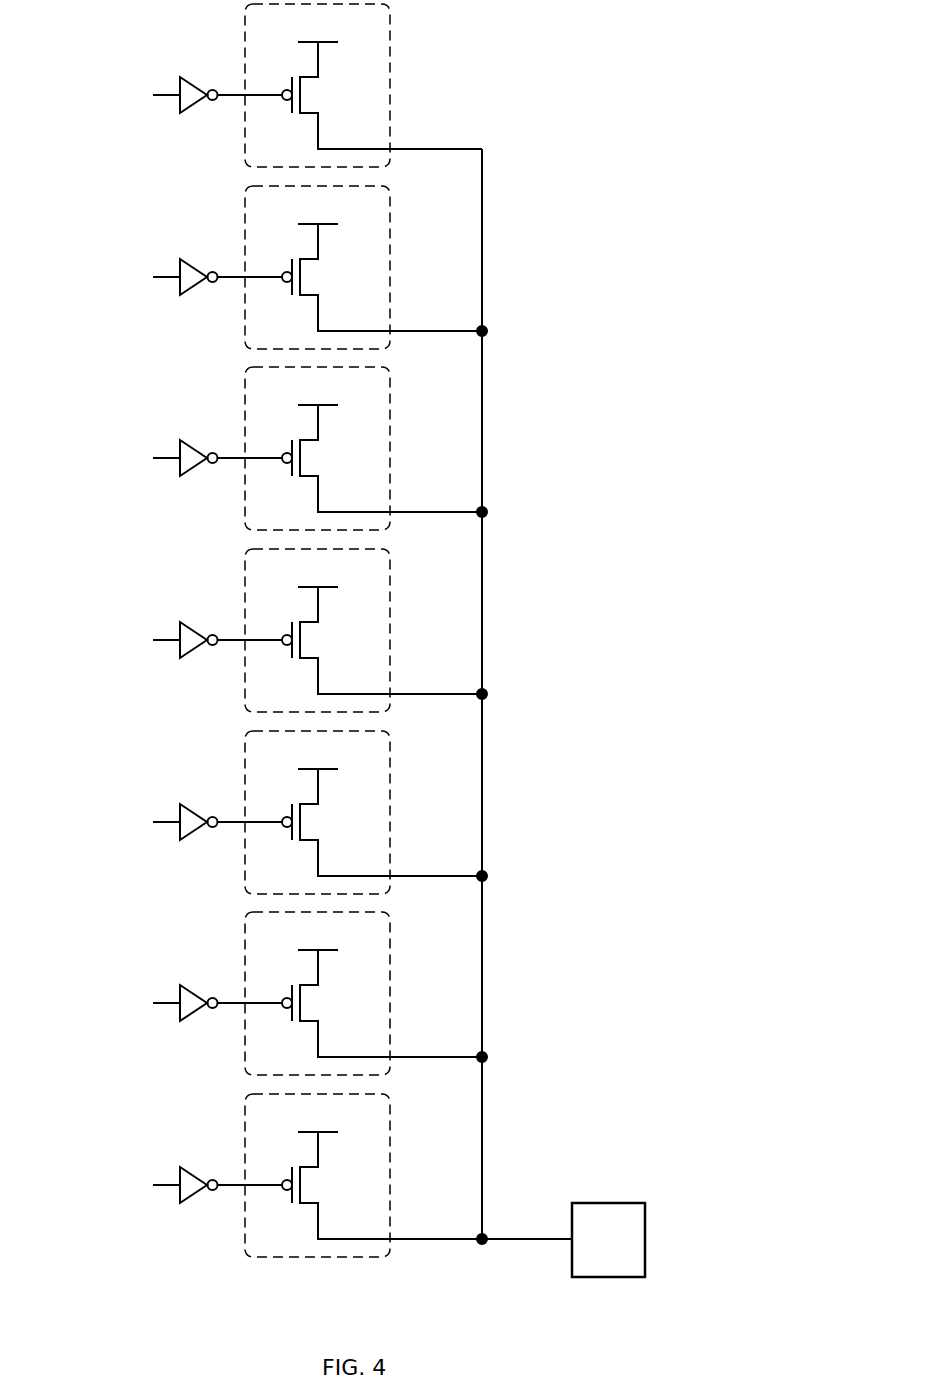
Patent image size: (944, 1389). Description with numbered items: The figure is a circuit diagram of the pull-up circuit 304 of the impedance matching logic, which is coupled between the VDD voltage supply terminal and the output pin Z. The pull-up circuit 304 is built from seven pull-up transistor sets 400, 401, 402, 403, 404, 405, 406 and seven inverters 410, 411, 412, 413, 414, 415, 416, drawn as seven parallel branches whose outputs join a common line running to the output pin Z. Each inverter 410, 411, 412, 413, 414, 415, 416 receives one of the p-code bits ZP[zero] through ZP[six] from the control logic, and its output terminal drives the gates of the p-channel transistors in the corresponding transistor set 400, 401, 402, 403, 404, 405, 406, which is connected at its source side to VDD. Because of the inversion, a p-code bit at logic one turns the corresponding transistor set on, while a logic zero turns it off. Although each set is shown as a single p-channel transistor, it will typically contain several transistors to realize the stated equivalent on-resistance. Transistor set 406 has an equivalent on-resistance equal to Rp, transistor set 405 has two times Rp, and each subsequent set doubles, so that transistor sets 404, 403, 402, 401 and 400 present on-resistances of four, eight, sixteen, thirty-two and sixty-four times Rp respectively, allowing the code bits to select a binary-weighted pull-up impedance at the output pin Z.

The pull-up circuit 304 is at (532, 95).
The pull-up transistor set 400 is at (366, 1175).
The pull-up transistor set 401 is at (366, 993).
The pull-up transistor set 402 is at (366, 812).
The pull-up transistor set 403 is at (366, 630).
The pull-up transistor set 404 is at (366, 448).
The pull-up transistor set 405 is at (366, 267).
The pull-up transistor set 406 is at (390, 75).
The inverter 410 is at (190, 1161).
The inverter 411 is at (190, 979).
The inverter 412 is at (190, 798).
The inverter 413 is at (190, 616).
The inverter 414 is at (190, 434).
The inverter 415 is at (190, 253).
The inverter 416 is at (193, 77).